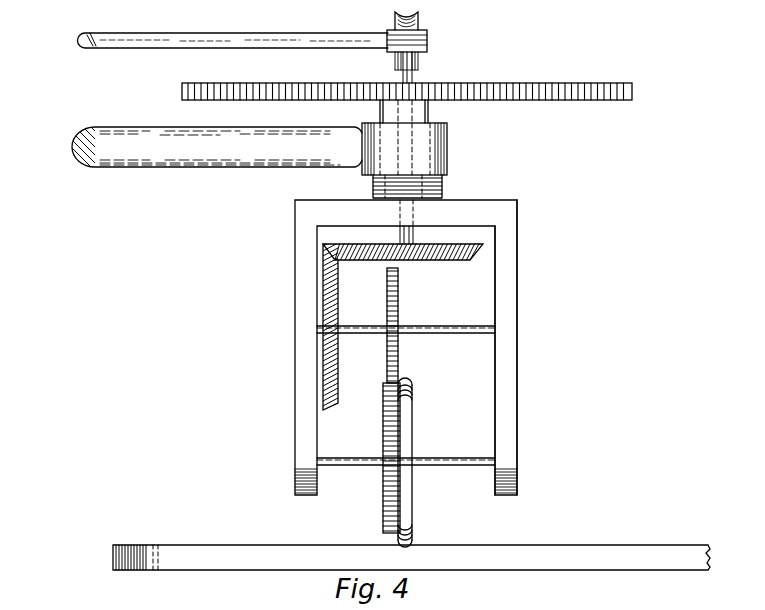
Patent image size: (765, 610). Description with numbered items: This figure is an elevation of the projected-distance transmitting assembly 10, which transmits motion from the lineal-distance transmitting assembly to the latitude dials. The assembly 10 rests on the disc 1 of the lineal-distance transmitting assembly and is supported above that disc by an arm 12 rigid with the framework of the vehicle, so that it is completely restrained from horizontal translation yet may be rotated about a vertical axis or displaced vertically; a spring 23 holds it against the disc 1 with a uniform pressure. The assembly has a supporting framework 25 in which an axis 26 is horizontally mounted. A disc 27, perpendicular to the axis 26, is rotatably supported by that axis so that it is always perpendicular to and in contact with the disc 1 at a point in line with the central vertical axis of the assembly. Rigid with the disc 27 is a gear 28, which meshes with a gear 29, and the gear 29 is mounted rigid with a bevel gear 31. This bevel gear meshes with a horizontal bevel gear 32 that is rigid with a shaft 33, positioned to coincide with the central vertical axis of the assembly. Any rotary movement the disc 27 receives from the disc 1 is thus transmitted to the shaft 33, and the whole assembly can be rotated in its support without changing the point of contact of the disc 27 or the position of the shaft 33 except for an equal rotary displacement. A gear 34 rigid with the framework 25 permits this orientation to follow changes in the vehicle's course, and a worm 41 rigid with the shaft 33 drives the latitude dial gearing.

The disc 1 is at (574, 553).
The projected-distance transmitting assembly 10 is at (512, 208).
The arm 12 is at (202, 150).
The spring 23 is at (440, 180).
The supporting framework 25 is at (513, 373).
The axis 26 is at (432, 466).
The disc 27 is at (406, 438).
The gear 28 is at (385, 428).
The gear 29 is at (400, 302).
The bevel gear 31 is at (338, 297).
The horizontal bevel gear 32 is at (427, 258).
The shaft 33 is at (412, 82).
The gear 34 is at (547, 84).
The worm 41 is at (430, 40).